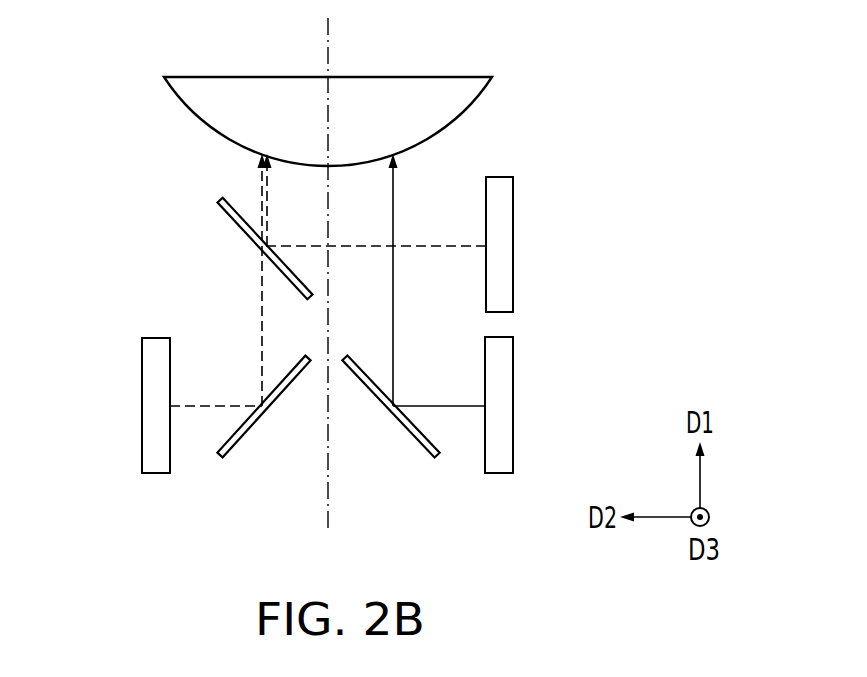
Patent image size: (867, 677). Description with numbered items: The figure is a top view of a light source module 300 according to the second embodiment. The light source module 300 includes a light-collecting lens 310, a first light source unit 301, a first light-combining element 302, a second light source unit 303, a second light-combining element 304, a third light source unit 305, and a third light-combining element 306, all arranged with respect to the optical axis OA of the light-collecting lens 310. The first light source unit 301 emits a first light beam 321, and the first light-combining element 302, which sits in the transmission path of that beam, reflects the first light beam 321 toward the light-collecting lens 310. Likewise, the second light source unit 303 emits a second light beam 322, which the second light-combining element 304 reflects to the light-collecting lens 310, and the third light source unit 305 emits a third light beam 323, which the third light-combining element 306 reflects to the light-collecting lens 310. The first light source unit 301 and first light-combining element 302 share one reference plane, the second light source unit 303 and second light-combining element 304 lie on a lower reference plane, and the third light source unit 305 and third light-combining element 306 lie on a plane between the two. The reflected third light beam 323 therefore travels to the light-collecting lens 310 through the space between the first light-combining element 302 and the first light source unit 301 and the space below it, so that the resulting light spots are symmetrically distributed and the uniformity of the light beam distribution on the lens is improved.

The light source module 300 is at (642, 47).
The light-collecting lens 310 is at (428, 117).
The first light source unit 301 is at (503, 253).
The first light-combining element 302 is at (240, 223).
The second light source unit 303 is at (153, 403).
The second light-combining element 304 is at (244, 438).
The third light source unit 305 is at (503, 403).
The third light-combining element 306 is at (408, 434).
The first light beam 321 is at (443, 247).
The second light beam 322 is at (262, 298).
The third light beam 323 is at (394, 204).
The optical axis OA is at (329, 30).